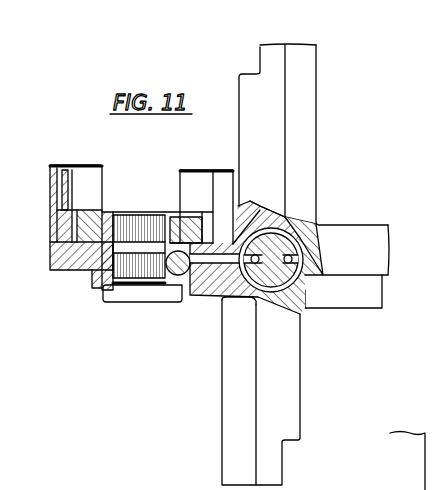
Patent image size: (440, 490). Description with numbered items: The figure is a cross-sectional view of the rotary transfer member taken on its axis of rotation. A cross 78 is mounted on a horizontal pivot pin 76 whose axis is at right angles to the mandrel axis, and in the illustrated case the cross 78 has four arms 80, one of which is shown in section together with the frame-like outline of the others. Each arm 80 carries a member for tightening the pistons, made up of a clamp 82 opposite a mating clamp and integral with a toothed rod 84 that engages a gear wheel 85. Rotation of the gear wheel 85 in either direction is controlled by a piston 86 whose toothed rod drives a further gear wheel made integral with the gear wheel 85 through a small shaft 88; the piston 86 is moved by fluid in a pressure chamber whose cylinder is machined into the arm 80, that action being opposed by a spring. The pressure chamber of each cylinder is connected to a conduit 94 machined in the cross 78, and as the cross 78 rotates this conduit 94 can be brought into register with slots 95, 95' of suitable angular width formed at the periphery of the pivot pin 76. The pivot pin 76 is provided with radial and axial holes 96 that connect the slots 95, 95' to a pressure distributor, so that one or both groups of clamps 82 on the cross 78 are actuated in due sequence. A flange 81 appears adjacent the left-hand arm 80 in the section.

The pivot pin 76 is at (257, 204).
The cross 78 is at (215, 297).
The arm 80 is at (50, 281).
The flange 81 is at (102, 270).
The clamp 82 is at (59, 163).
The toothed rod 84 is at (167, 213).
The gear wheel 85 is at (141, 214).
The piston 86 is at (175, 280).
The small shaft 88 is at (135, 293).
The conduit 94 is at (205, 270).
The slot 95 is at (298, 285).
The slot 95' is at (303, 238).
The radial and axial holes 96 is at (303, 258).